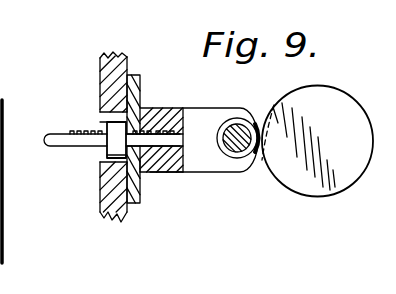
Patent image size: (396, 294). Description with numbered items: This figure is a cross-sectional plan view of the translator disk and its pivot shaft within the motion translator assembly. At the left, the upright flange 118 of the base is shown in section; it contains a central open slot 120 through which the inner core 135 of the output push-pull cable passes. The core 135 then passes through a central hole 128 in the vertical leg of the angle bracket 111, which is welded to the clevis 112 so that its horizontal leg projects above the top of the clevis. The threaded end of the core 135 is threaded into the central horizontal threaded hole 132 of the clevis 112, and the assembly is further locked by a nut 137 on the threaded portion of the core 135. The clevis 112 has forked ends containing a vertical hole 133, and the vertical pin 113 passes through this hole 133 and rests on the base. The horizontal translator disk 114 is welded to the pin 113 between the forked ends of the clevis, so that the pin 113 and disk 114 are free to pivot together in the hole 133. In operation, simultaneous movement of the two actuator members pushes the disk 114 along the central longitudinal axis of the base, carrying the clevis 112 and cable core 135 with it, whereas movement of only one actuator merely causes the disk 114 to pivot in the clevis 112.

The angle bracket 111 is at (143, 78).
The clevis 112 is at (197, 108).
The vertical pin 113 is at (250, 168).
The horizontal translator disk 114 is at (292, 193).
The upright flange 118 is at (100, 74).
The central open slot 120 is at (100, 128).
The central hole 128 is at (157, 175).
The central horizontal threaded hole 132 is at (170, 175).
The vertical hole 133 is at (232, 168).
The inner core 135 is at (58, 146).
The nut 137 is at (100, 153).